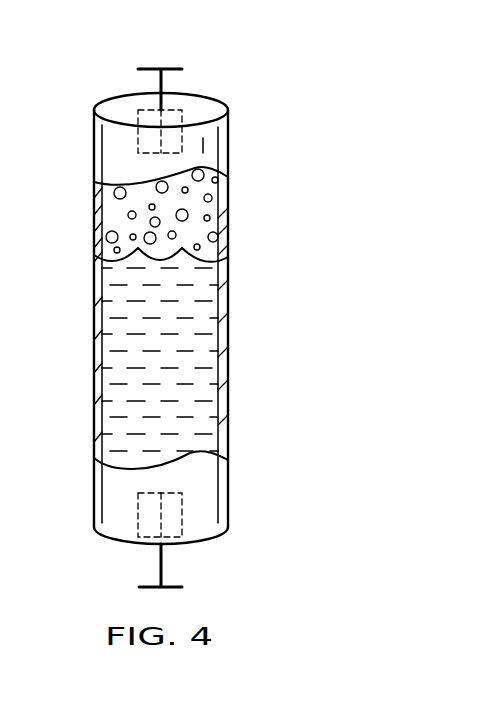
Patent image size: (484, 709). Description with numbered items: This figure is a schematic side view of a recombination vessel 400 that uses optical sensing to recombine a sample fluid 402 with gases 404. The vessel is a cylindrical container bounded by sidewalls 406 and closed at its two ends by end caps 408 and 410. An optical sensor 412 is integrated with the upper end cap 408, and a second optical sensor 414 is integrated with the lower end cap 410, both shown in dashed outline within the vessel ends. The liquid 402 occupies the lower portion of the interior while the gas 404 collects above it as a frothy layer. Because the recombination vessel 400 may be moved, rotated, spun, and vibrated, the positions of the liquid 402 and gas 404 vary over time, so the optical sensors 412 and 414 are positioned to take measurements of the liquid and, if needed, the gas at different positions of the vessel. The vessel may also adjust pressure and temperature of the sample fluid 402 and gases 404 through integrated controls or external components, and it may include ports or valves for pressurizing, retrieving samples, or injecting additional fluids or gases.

The recombination vessel 400 is at (257, 102).
The sample fluid 402 is at (107, 453).
The gases 404 is at (108, 210).
The sidewalls 406 is at (228, 303).
The end cap 408 is at (150, 66).
The end cap 410 is at (161, 560).
The optical sensor 412 is at (133, 113).
The optical sensor 414 is at (183, 505).